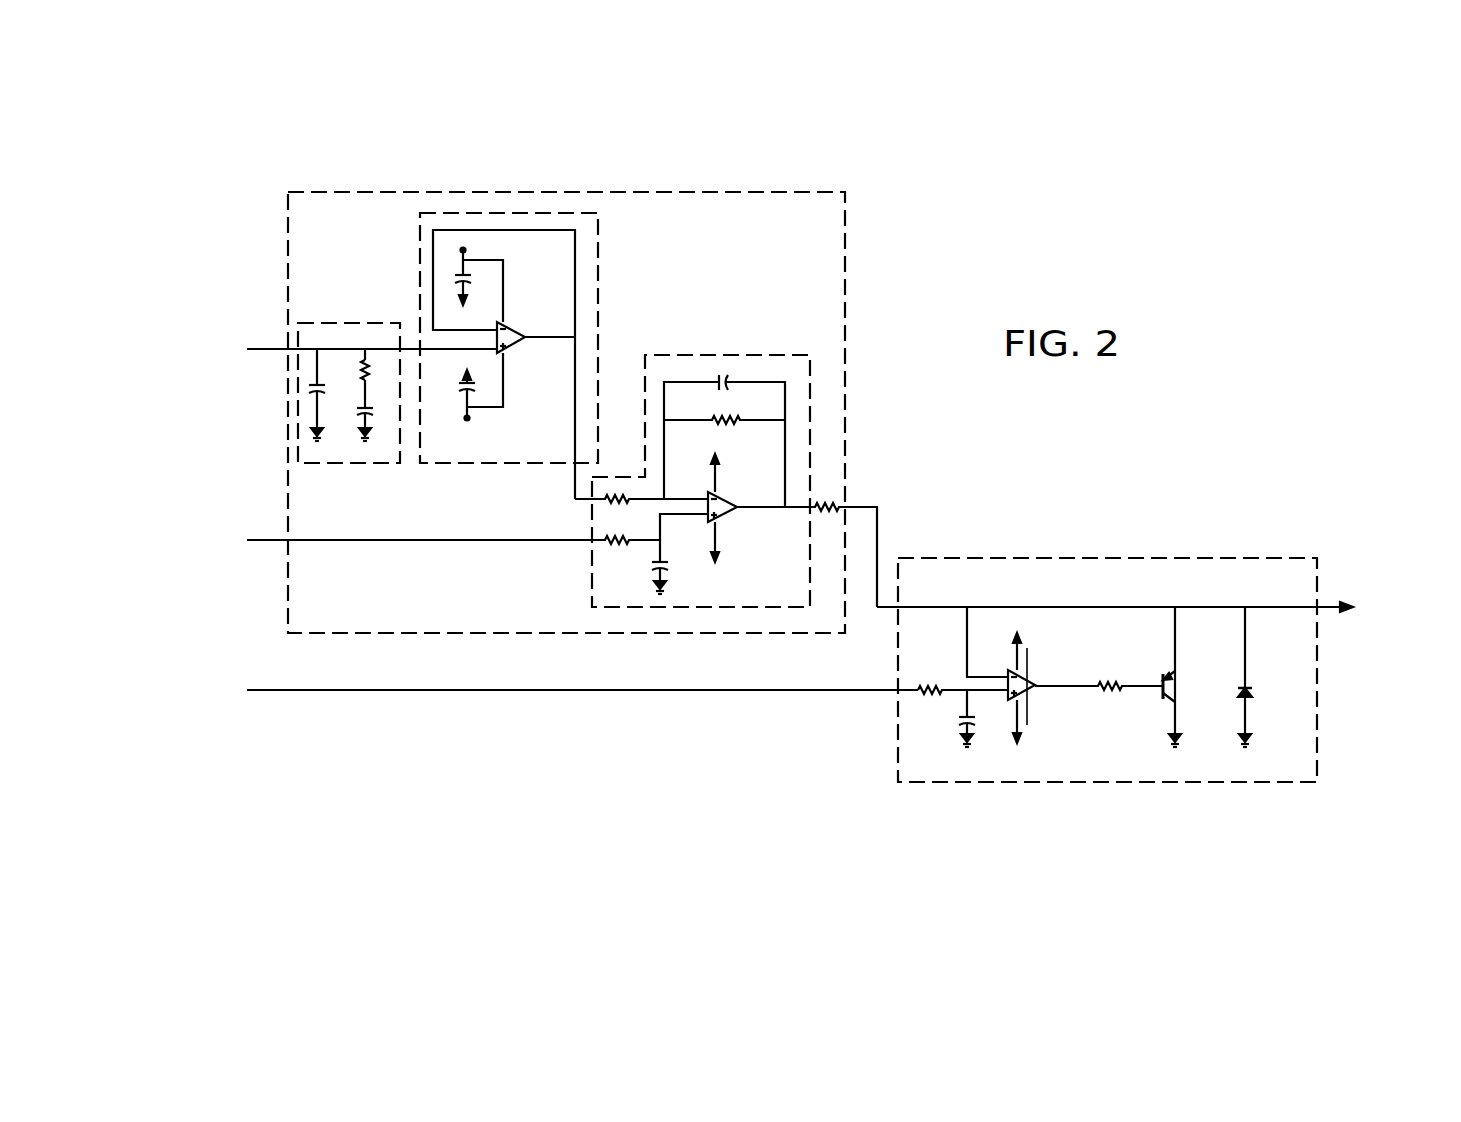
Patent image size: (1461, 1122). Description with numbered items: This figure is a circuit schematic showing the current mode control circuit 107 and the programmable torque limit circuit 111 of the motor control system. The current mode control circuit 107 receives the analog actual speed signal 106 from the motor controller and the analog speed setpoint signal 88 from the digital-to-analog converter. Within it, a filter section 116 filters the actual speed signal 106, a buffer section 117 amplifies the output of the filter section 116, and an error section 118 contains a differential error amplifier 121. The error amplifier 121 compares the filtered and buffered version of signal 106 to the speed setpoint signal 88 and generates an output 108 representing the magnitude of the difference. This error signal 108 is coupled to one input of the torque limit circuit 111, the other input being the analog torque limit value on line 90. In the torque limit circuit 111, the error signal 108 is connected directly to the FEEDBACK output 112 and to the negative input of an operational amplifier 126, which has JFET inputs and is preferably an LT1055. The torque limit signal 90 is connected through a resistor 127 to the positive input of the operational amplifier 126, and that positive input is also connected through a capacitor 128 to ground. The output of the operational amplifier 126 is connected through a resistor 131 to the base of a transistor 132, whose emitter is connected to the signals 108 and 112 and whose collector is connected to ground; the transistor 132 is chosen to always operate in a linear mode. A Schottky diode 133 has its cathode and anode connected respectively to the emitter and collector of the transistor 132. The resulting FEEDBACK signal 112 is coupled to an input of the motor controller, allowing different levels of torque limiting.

The actual speed signal 106 is at (264, 347).
The speed setpoint signal 88 is at (266, 538).
The torque limit signal 90 is at (268, 688).
The current mode control circuit 107 is at (845, 247).
The filter section 116 is at (400, 468).
The buffer section 117 is at (553, 468).
The error section 118 is at (778, 353).
The differential error amplifier 121 is at (730, 490).
The output of the current mode control circuit 108 is at (877, 532).
The programmable torque limit circuit 111 is at (958, 558).
The FEEDBACK signal 112 is at (1328, 600).
The operational amplifier 126 is at (1022, 683).
The resistor 127 is at (931, 688).
The capacitor 128 is at (956, 726).
The resistor 131 is at (1120, 680).
The transistor 132 is at (1168, 676).
The Schottky diode 133 is at (1250, 682).